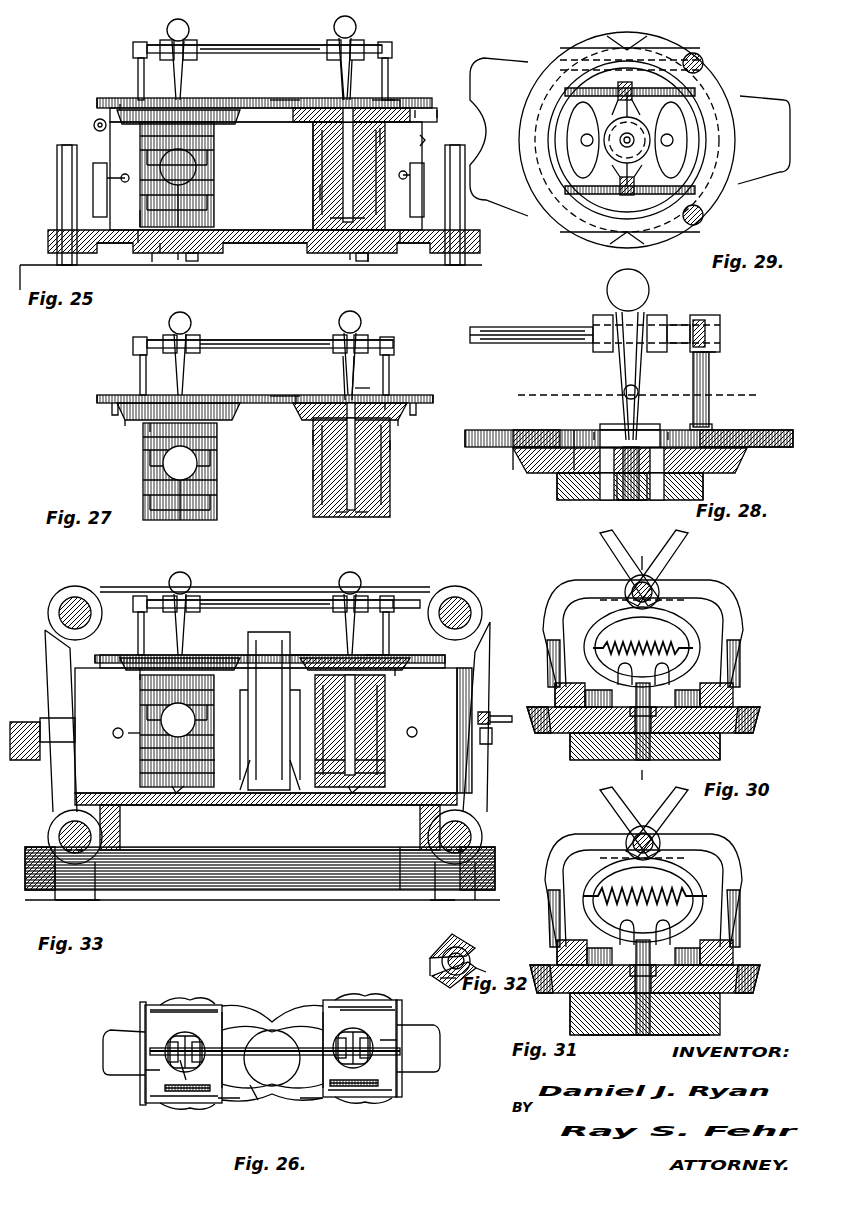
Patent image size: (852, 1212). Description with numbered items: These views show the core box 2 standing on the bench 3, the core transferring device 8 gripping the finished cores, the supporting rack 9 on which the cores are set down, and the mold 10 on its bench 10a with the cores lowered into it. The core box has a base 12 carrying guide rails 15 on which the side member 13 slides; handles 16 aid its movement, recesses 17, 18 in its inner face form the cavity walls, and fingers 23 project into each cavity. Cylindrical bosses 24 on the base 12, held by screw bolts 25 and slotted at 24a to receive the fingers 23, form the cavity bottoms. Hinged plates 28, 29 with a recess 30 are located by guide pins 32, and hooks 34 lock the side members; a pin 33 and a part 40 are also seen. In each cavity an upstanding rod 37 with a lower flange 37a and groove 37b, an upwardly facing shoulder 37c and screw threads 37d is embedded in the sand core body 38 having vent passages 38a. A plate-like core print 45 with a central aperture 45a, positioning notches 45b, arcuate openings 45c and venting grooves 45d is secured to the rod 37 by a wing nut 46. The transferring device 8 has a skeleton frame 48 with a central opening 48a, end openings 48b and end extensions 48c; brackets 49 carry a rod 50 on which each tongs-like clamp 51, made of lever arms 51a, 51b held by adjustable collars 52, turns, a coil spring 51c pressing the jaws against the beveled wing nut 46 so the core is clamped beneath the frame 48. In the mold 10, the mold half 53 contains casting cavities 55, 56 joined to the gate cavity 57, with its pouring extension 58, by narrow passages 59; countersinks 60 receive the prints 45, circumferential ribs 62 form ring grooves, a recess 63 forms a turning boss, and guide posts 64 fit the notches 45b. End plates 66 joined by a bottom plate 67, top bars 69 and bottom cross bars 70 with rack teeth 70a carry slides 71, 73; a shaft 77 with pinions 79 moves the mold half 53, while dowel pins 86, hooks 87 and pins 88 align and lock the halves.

In FIG. 25, the core box 2 is at (250, 252).
In FIG. 25, the bench 3 is at (40, 266).
In FIG. 25, the core transferring device 8 is at (240, 46).
In FIG. 29, the core transferring device 8 is at (540, 60).
In FIG. 27, the core transferring device 8 is at (258, 342).
In FIG. 28, the core transferring device 8 is at (566, 327).
In FIG. 33, the core transferring device 8 is at (224, 598).
In FIG. 30, the core transferring device 8 is at (670, 578).
In FIG. 31, the core transferring device 8 is at (744, 882).
In FIG. 26, the core transferring device 8 is at (280, 1014).
In FIG. 27, the supporting rack 9 is at (115, 418).
In FIG. 33, the mold 10 is at (486, 640).
In FIG. 33, the bench 10a is at (500, 896).
In FIG. 25, the base 12 is at (238, 253).
In FIG. 25, the side member 13 is at (262, 172).
In FIG. 25, the guide rail 15 is at (140, 240).
In FIG. 25, the handle 16 is at (93, 190).
In FIG. 25, the recess 17 is at (313, 150).
In FIG. 25, the recess 18 is at (205, 164).
In FIG. 25, the finger 23 is at (182, 253).
In FIG. 25, the cylindrical boss 24 is at (152, 262).
In FIG. 25, the slot 24a is at (160, 255).
In FIG. 25, the screw bolt 25 is at (194, 262).
In FIG. 25, the hinged plate 28 is at (437, 114).
In FIG. 30, the hinged plate 28 is at (642, 534).
In FIG. 28, the hinged plate 29 is at (518, 395).
In FIG. 28, the recess 30 is at (574, 280).
In FIG. 28, the guide pin 32 is at (594, 432).
In FIG. 25, the pin 33 is at (121, 176).
In FIG. 25, the hook 34 is at (425, 140).
In FIG. 25, the rod 37 is at (320, 170).
In FIG. 29, the rod 37 is at (636, 138).
In FIG. 27, the rod 37 is at (390, 460).
In FIG. 28, the rod 37 is at (612, 498).
In FIG. 33, the rod 37 is at (368, 692).
In FIG. 30, the rod 37 is at (660, 762).
In FIG. 31, the rod 37 is at (720, 1014).
In FIG. 32, the rod 37 is at (470, 960).
In FIG. 25, the flange 37a is at (322, 190).
In FIG. 27, the flange 37a is at (340, 516).
In FIG. 25, the slot or groove 37b is at (340, 218).
In FIG. 27, the slot or groove 37b is at (358, 516).
In FIG. 25, the shoulder 37c is at (386, 142).
In FIG. 27, the shoulder 37c is at (314, 436).
In FIG. 30, the shoulder 37c is at (575, 760).
In FIG. 31, the shoulder 37c is at (570, 1018).
In FIG. 32, the shoulder 37c is at (486, 972).
In FIG. 27, the screw threads 37d is at (362, 392).
In FIG. 25, the core body 38 is at (214, 176).
In FIG. 29, the core body 38 is at (664, 172).
In FIG. 27, the core body 38 is at (145, 494).
In FIG. 28, the core body 38 is at (557, 492).
In FIG. 33, the core body 38 is at (150, 694).
In FIG. 30, the core body 38 is at (720, 752).
In FIG. 31, the core body 38 is at (614, 1035).
In FIG. 29, the vent passage 38a is at (580, 130).
In FIG. 27, the vent passage 38a is at (390, 446).
In FIG. 28, the vent passage 38a is at (703, 488).
In FIG. 25, the guide post 40 is at (57, 210).
In FIG. 25, the core print 45 is at (117, 114).
In FIG. 29, the core print 45 is at (672, 250).
In FIG. 27, the core print 45 is at (224, 418).
In FIG. 28, the core print 45 is at (748, 460).
In FIG. 33, the core print 45 is at (212, 660).
In FIG. 30, the core print 45 is at (740, 712).
In FIG. 31, the core print 45 is at (740, 968).
In FIG. 26, the core print 45 is at (150, 1098).
In FIG. 28, the central aperture 45a is at (582, 498).
In FIG. 30, the central aperture 45a is at (710, 758).
In FIG. 25, the notch 45b is at (96, 126).
In FIG. 29, the notch 45b is at (632, 40).
In FIG. 27, the notch 45b is at (160, 430).
In FIG. 33, the notch 45b is at (150, 676).
In FIG. 30, the notch 45b is at (760, 728).
In FIG. 31, the notch 45b is at (755, 980).
In FIG. 26, the notch 45b is at (150, 1105).
In FIG. 25, the arcuate opening 45c is at (395, 102).
In FIG. 29, the arcuate opening 45c is at (665, 108).
In FIG. 27, the arcuate opening 45c is at (392, 406).
In FIG. 28, the arcuate opening 45c is at (580, 438).
In FIG. 33, the arcuate opening 45c is at (400, 672).
In FIG. 32, the arcuate opening 45c is at (448, 978).
In FIG. 26, the arcuate opening 45c is at (145, 1070).
In FIG. 25, the venting groove 45d is at (130, 104).
In FIG. 29, the venting groove 45d is at (690, 40).
In FIG. 27, the venting groove 45d is at (140, 424).
In FIG. 28, the venting groove 45d is at (518, 462).
In FIG. 33, the venting groove 45d is at (126, 658).
In FIG. 32, the venting groove 45d is at (430, 970).
In FIG. 26, the venting groove 45d is at (345, 1030).
In FIG. 25, the wing nut 46 is at (340, 92).
In FIG. 29, the wing nut 46 is at (660, 150).
In FIG. 27, the wing nut 46 is at (340, 388).
In FIG. 30, the wing nut 46 is at (672, 676).
In FIG. 31, the wing nut 46 is at (640, 936).
In FIG. 32, the wing nut 46 is at (440, 960).
In FIG. 25, the skeleton plate or frame 48 is at (250, 100).
In FIG. 29, the skeleton plate or frame 48 is at (560, 202).
In FIG. 27, the skeleton plate or frame 48 is at (212, 396).
In FIG. 28, the skeleton plate or frame 48 is at (515, 432).
In FIG. 33, the skeleton plate or frame 48 is at (135, 655).
In FIG. 30, the skeleton plate or frame 48 is at (555, 690).
In FIG. 31, the skeleton plate or frame 48 is at (732, 944).
In FIG. 26, the skeleton plate or frame 48 is at (258, 1018).
In FIG. 25, the central opening 48a is at (282, 100).
In FIG. 29, the central opening 48a is at (578, 150).
In FIG. 27, the central opening 48a is at (280, 396).
In FIG. 28, the central opening 48a is at (482, 432).
In FIG. 33, the central opening 48a is at (300, 655).
In FIG. 26, the central opening 48a is at (258, 1100).
In FIG. 25, the end opening 48b is at (385, 100).
In FIG. 29, the end opening 48b is at (584, 200).
In FIG. 27, the end opening 48b is at (300, 395).
In FIG. 28, the end opening 48b is at (718, 400).
In FIG. 33, the end opening 48b is at (372, 655).
In FIG. 30, the end opening 48b is at (570, 682).
In FIG. 31, the end opening 48b is at (570, 946).
In FIG. 26, the end opening 48b is at (220, 1096).
In FIG. 25, the end extension 48c is at (97, 102).
In FIG. 29, the end extension 48c is at (745, 108).
In FIG. 27, the end extension 48c is at (100, 398).
In FIG. 28, the end extension 48c is at (760, 432).
In FIG. 33, the end extension 48c is at (95, 660).
In FIG. 26, the end extension 48c is at (110, 1060).
In FIG. 25, the bracket 49 is at (136, 66).
In FIG. 29, the bracket 49 is at (703, 222).
In FIG. 27, the bracket 49 is at (140, 372).
In FIG. 28, the bracket 49 is at (710, 366).
In FIG. 33, the bracket 49 is at (136, 612).
In FIG. 30, the bracket 49 is at (738, 622).
In FIG. 31, the bracket 49 is at (740, 900).
In FIG. 26, the bracket 49 is at (145, 1100).
In FIG. 25, the rod 50 is at (218, 45).
In FIG. 27, the rod 50 is at (234, 338).
In FIG. 28, the rod 50 is at (520, 343).
In FIG. 33, the rod 50 is at (272, 600).
In FIG. 30, the rod 50 is at (628, 596).
In FIG. 31, the rod 50 is at (660, 840).
In FIG. 26, the rod 50 is at (272, 1086).
In FIG. 25, the tongs-like clamp 51 is at (168, 30).
In FIG. 29, the tongs-like clamp 51 is at (634, 86).
In FIG. 27, the tongs-like clamp 51 is at (192, 324).
In FIG. 28, the tongs-like clamp 51 is at (664, 300).
In FIG. 33, the tongs-like clamp 51 is at (170, 596).
In FIG. 30, the tongs-like clamp 51 is at (688, 546).
In FIG. 31, the tongs-like clamp 51 is at (612, 822).
In FIG. 26, the tongs-like clamp 51 is at (350, 1040).
In FIG. 29, the lever arm 51a is at (616, 86).
In FIG. 28, the lever arm 51a is at (620, 372).
In FIG. 30, the lever arm 51a is at (600, 608).
In FIG. 31, the lever arm 51a is at (600, 866).
In FIG. 32, the lever arm 51a is at (460, 940).
In FIG. 26, the lever arm 51a is at (186, 1034).
In FIG. 29, the lever arm 51b is at (620, 196).
In FIG. 28, the lever arm 51b is at (640, 370).
In FIG. 30, the lever arm 51b is at (690, 606).
In FIG. 31, the lever arm 51b is at (690, 866).
In FIG. 32, the lever arm 51b is at (470, 974).
In FIG. 26, the lever arm 51b is at (228, 1110).
In FIG. 28, the coil spring 51c is at (622, 392).
In FIG. 30, the coil spring 51c is at (648, 650).
In FIG. 31, the coil spring 51c is at (634, 894).
In FIG. 25, the adjustable collar 52 is at (262, 50).
In FIG. 27, the adjustable collar 52 is at (265, 344).
In FIG. 28, the adjustable collar 52 is at (602, 318).
In FIG. 33, the adjustable collar 52 is at (165, 598).
In FIG. 30, the adjustable collar 52 is at (660, 596).
In FIG. 31, the adjustable collar 52 is at (606, 856).
In FIG. 26, the adjustable collar 52 is at (178, 1040).
In FIG. 33, the mold half 53 is at (462, 782).
In FIG. 33, the casting cavity 55 is at (140, 736).
In FIG. 33, the casting cavity 56 is at (420, 740).
In FIG. 33, the gate cavity 57 is at (270, 796).
In FIG. 33, the upstanding extension 58 is at (262, 632).
In FIG. 33, the narrow passage 59 is at (240, 790).
In FIG. 33, the countersink 60 is at (282, 680).
In FIG. 33, the circumferential rib 62 is at (143, 768).
In FIG. 33, the recess 63 is at (180, 792).
In FIG. 27, the guide post 64 is at (180, 483).
In FIG. 33, the guide post 64 is at (180, 572).
In FIG. 33, the end plate 66 is at (396, 600).
In FIG. 33, the bottom plate 67 is at (215, 805).
In FIG. 33, the top bar 69 is at (60, 610).
In FIG. 33, the bottom cross bar 70 is at (56, 832).
In FIG. 33, the rack teeth 70a is at (78, 858).
In FIG. 33, the slide 71 is at (48, 770).
In FIG. 33, the slide 73 is at (478, 615).
In FIG. 33, the shaft 77 is at (278, 890).
In FIG. 33, the pinion 79 is at (416, 890).
In FIG. 33, the dowel pin 86 is at (112, 732).
In FIG. 33, the hook 87 is at (40, 726).
In FIG. 33, the pin 88 is at (40, 748).